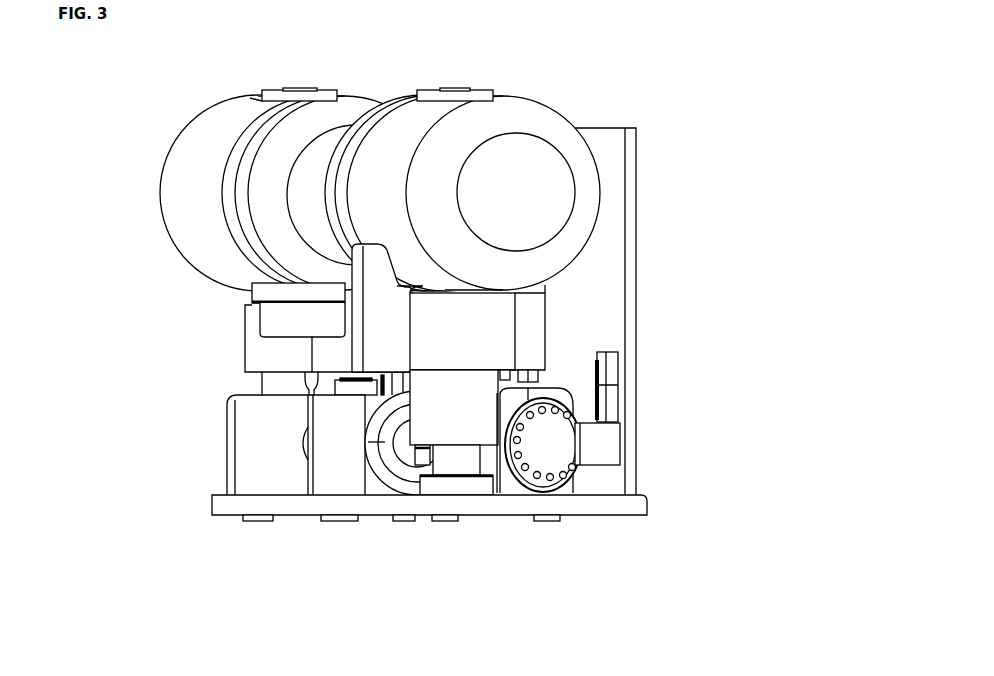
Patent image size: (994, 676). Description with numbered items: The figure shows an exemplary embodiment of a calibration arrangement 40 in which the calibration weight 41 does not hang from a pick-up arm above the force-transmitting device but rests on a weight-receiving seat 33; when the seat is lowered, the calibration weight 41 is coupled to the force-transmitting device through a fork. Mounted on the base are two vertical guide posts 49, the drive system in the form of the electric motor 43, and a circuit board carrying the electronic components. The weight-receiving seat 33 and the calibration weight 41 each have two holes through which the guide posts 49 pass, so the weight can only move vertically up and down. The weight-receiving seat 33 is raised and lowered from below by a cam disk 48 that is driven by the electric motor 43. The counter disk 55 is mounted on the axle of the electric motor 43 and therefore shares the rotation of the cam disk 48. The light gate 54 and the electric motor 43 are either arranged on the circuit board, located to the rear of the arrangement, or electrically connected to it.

The calibration arrangement 40 is at (684, 71).
The calibration weight 41 is at (505, 118).
The weight-receiving seat 33 is at (375, 270).
The electric motor 43 is at (547, 388).
The cam disk 48 is at (393, 466).
The guide posts 49 is at (459, 466).
The light gate 54 is at (602, 436).
The counter disk 55 is at (547, 450).